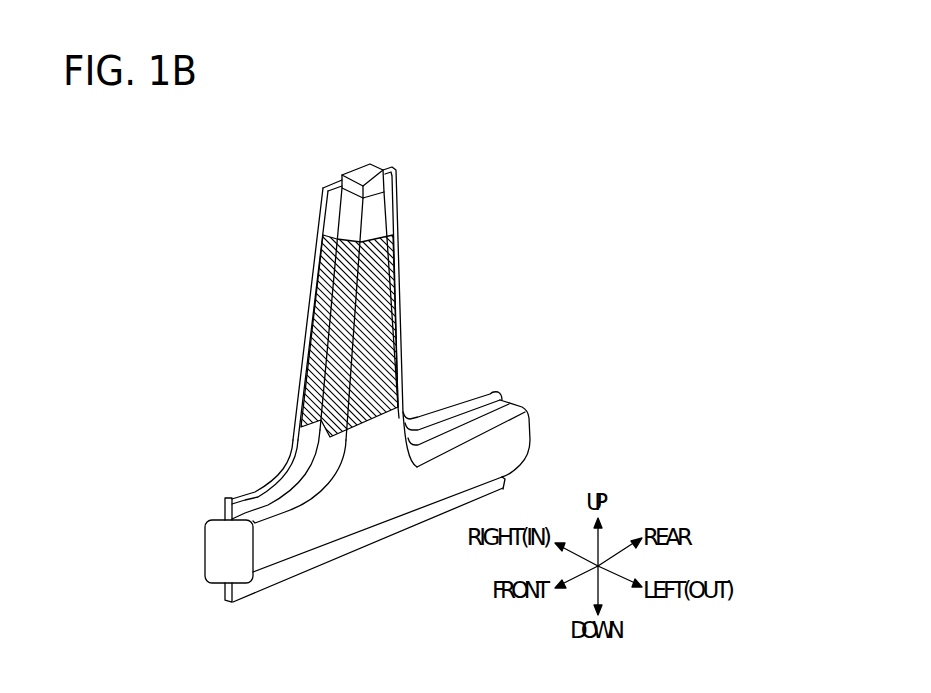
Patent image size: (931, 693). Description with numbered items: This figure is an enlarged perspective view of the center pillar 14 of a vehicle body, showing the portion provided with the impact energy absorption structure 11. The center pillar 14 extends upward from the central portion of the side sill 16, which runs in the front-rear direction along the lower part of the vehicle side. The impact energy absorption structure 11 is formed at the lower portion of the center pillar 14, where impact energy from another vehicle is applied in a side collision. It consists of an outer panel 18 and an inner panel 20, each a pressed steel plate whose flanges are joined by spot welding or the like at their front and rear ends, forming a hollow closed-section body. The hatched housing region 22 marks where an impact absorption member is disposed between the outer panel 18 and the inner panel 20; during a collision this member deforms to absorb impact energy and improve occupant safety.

The impact energy absorption structure 11 is at (362, 142).
The center pillar 14 is at (413, 166).
The side sill 16 is at (528, 425).
The outer panel 18 is at (384, 193).
The inner panel 20 is at (352, 167).
The housing region 22 is at (425, 232).